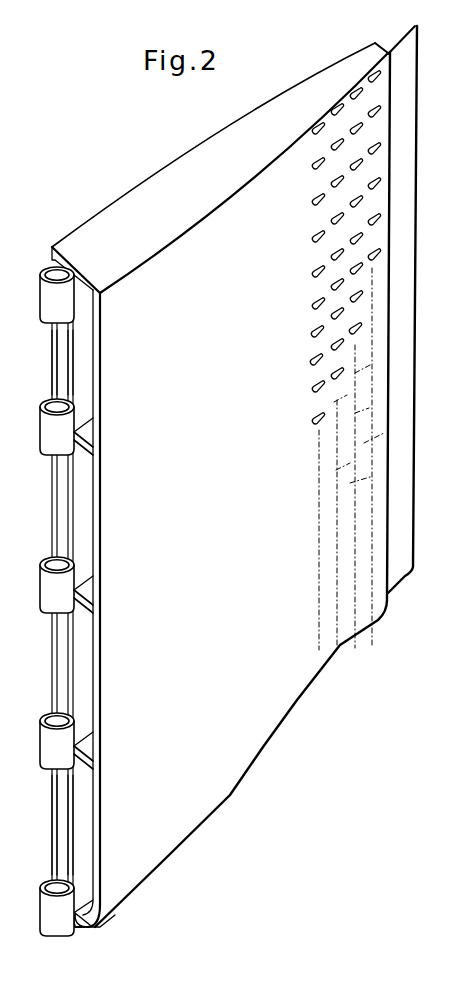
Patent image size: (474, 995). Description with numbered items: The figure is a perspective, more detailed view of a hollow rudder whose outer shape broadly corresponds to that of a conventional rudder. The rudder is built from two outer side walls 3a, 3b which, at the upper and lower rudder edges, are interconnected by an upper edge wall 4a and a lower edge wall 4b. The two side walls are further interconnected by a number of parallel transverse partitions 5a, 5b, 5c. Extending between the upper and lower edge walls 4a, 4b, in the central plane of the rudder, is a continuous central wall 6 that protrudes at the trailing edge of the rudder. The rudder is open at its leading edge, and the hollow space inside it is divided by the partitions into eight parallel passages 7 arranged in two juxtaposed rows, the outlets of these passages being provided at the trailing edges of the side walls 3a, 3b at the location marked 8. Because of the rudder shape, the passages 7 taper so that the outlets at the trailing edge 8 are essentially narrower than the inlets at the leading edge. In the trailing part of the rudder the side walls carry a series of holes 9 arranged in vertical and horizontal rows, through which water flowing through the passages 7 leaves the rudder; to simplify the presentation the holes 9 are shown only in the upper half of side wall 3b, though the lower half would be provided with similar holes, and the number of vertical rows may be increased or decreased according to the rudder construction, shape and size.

The outer side wall 3a is at (50, 487).
The outer side wall 3b is at (110, 509).
The upper edge wall 4a is at (178, 164).
The lower edge wall 4b is at (95, 928).
The transverse partition 5a is at (88, 428).
The transverse partition 5b is at (85, 592).
The transverse partition 5c is at (85, 748).
The central wall 6 is at (400, 458).
The parallel passages 7 is at (88, 345).
The passage outlets 8 is at (389, 143).
The holes 9 is at (337, 255).